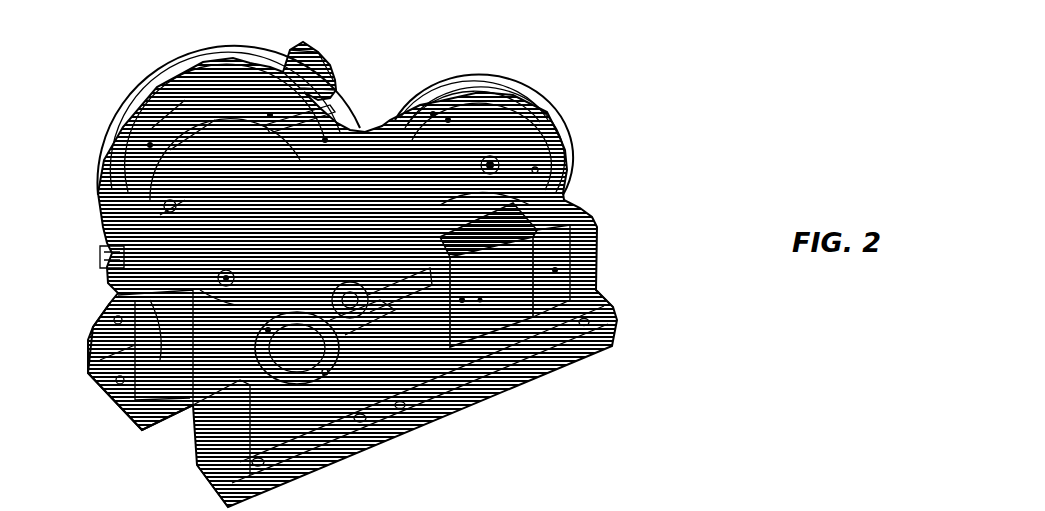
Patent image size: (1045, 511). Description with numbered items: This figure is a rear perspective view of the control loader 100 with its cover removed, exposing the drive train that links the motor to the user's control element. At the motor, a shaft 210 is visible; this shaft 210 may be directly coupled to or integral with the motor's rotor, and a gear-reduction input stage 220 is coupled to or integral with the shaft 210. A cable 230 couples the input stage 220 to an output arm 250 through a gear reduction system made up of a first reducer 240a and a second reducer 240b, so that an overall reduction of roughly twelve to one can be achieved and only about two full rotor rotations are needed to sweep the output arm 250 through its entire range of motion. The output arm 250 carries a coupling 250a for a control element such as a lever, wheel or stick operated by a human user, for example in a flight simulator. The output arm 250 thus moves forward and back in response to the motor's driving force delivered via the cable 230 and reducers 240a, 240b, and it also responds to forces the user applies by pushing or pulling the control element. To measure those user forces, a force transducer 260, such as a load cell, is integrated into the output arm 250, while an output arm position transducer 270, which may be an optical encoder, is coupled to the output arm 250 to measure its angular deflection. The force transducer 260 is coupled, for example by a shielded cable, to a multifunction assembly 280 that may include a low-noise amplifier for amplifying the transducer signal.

The control loader 100 is at (722, 146).
The shaft 210 is at (366, 306).
The gear-reduction input stage 220 is at (228, 123).
The cable 230 is at (447, 119).
The first reducer 240a is at (484, 139).
The second reducer 240b is at (143, 360).
The output arm 250 is at (160, 250).
The coupling 250a is at (164, 204).
The force transducer 260 is at (216, 276).
The output arm position transducer 270 is at (325, 342).
The multifunction assembly 280 is at (505, 275).